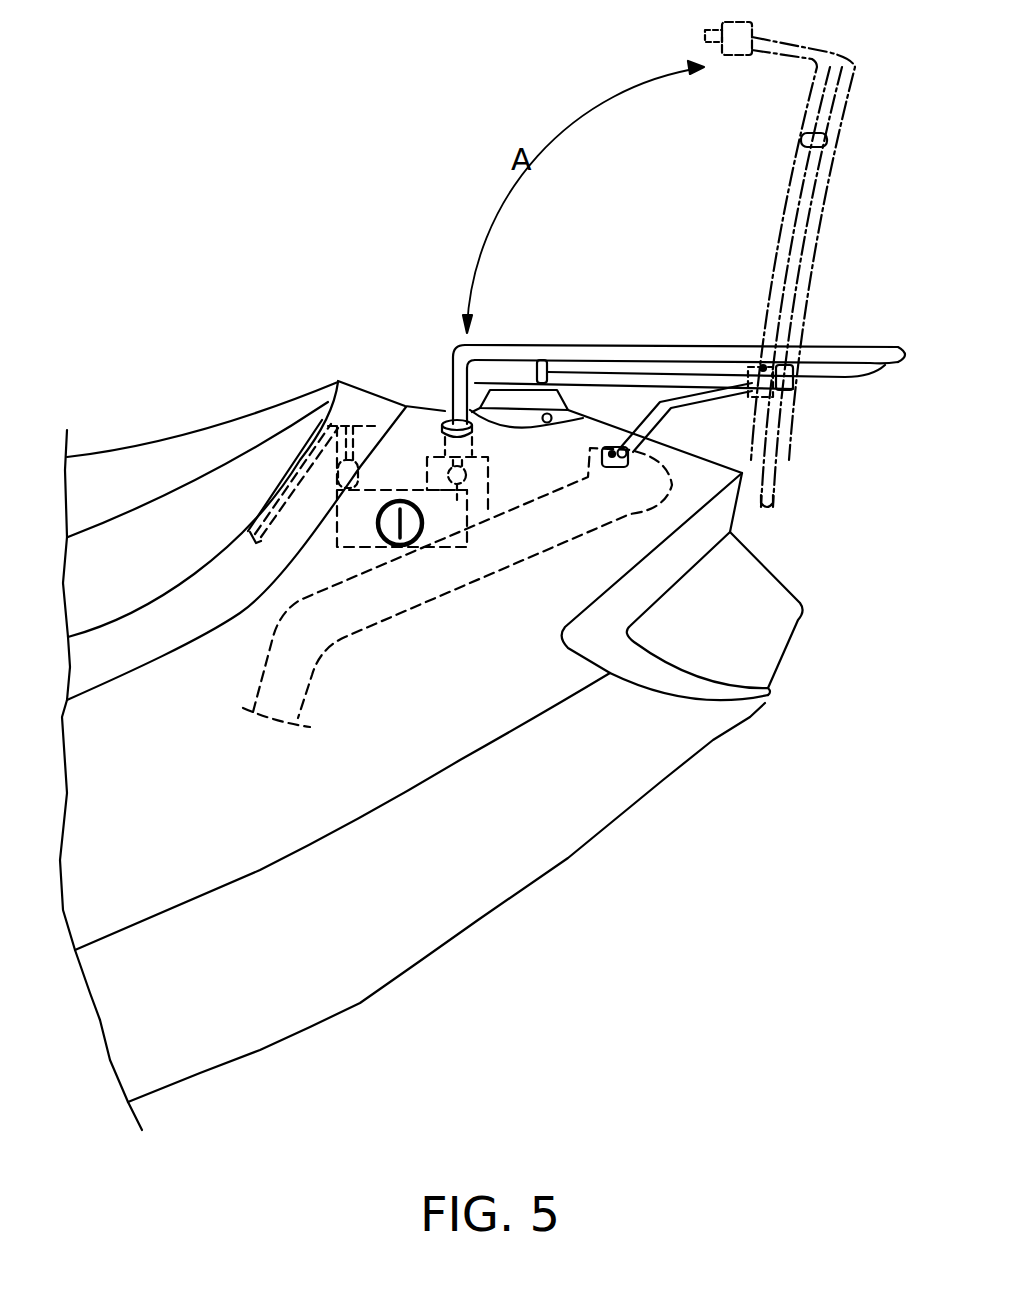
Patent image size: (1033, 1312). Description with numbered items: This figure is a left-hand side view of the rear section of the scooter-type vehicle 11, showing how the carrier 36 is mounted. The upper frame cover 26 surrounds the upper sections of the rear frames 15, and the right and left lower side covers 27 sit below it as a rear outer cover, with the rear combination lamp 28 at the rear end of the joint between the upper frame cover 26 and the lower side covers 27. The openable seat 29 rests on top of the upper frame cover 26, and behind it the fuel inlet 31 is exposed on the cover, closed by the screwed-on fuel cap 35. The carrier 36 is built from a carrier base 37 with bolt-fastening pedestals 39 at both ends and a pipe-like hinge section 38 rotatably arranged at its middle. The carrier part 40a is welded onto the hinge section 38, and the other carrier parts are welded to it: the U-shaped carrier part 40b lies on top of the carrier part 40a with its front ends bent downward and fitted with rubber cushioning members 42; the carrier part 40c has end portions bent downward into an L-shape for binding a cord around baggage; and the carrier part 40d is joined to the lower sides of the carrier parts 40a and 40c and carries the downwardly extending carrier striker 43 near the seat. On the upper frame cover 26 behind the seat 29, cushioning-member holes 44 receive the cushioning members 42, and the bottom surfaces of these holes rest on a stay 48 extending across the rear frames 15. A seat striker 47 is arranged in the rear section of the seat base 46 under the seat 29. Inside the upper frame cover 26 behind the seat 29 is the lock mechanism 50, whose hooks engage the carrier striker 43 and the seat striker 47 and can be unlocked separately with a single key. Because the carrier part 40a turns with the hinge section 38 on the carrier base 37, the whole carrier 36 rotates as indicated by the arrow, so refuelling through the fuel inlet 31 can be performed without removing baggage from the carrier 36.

The scooter-type vehicle 11 is at (636, 221).
The rear frames 15 is at (468, 577).
The upper frame cover 26 is at (693, 483).
The lower side covers 27 is at (682, 743).
The rear combination lamp 28 is at (762, 607).
The seat 29 is at (202, 455).
The fuel inlet 31 is at (547, 422).
The fuel cap 35 is at (568, 397).
The carrier 36 is at (848, 325).
The carrier base 37 is at (657, 400).
The hinge section 38 is at (782, 410).
The pedestals 39 is at (609, 468).
The carrier part 40a is at (795, 378).
The carrier part 40b is at (568, 345).
The carrier part 40c is at (540, 360).
The carrier part 40d is at (603, 374).
The cushioning members 42 is at (448, 450).
The carrier striker 43 is at (437, 473).
The cushioning-member holes 44 is at (455, 412).
The seat base 46 is at (293, 465).
The seat striker 47 is at (328, 405).
The stay 48 is at (480, 508).
The lock mechanism 50 is at (360, 526).